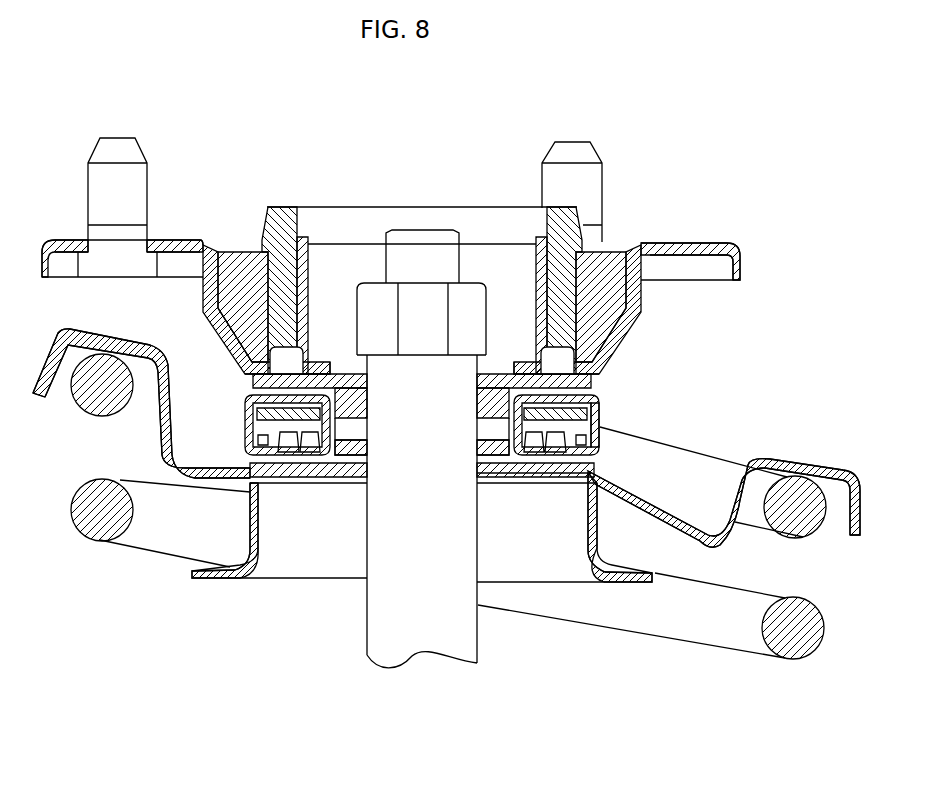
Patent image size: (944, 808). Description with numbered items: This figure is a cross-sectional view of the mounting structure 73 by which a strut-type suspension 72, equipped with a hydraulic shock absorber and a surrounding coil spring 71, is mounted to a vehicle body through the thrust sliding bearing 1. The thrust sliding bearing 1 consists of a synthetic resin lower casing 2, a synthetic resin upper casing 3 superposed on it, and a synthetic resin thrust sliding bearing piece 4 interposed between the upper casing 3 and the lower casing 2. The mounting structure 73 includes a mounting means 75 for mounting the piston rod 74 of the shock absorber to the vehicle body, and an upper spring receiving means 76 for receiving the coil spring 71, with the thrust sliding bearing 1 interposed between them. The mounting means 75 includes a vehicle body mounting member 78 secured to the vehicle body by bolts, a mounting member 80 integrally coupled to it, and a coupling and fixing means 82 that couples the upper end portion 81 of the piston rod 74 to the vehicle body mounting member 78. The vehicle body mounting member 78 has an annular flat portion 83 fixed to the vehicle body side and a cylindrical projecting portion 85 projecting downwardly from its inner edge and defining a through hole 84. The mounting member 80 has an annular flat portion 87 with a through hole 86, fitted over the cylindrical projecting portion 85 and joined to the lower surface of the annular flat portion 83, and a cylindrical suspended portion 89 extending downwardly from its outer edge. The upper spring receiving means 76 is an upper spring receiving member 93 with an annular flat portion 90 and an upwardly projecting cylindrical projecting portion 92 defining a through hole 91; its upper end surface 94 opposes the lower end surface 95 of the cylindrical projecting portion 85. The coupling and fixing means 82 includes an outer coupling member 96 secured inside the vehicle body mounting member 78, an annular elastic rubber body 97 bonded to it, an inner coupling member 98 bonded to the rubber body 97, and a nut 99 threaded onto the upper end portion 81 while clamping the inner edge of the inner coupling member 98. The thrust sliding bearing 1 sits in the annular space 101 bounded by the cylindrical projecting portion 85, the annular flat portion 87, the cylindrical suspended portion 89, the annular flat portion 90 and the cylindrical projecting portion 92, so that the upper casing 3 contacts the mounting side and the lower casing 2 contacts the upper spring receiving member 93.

The thrust sliding bearing 1 is at (288, 462).
The lower casing 2 is at (520, 460).
The upper casing 3 is at (263, 418).
The thrust sliding bearing piece 4 is at (303, 455).
The coil spring 71 is at (95, 528).
The strut-type suspension 72 is at (699, 658).
The mounting structure 73 is at (654, 351).
The piston rod 74 is at (372, 626).
The mounting means 75 is at (364, 196).
The upper spring receiving means 76 is at (802, 452).
The vehicle body mounting member 78 is at (696, 252).
The mounting member 80 is at (604, 408).
The upper end portion 81 is at (416, 250).
The coupling and fixing means 82 is at (262, 214).
The annular flat portion 83 is at (285, 388).
The through hole 84 is at (353, 408).
The cylindrical projecting portion 85 is at (338, 396).
The through hole 86 is at (525, 385).
The annular flat portion 87 is at (590, 396).
The cylindrical suspended portion 89 is at (600, 425).
The annular flat portion 90 is at (545, 465).
The through hole 91 is at (356, 468).
The cylindrical projecting portion 92 is at (490, 468).
The upper spring receiving member 93 is at (98, 347).
The upper end surface 94 is at (353, 431).
The lower end surface 95 is at (490, 428).
The outer coupling member 96 is at (630, 303).
The annular elastic rubber body 97 is at (258, 298).
The inner coupling member 98 is at (303, 270).
The nut 99 is at (428, 318).
The annular space 101 is at (262, 438).